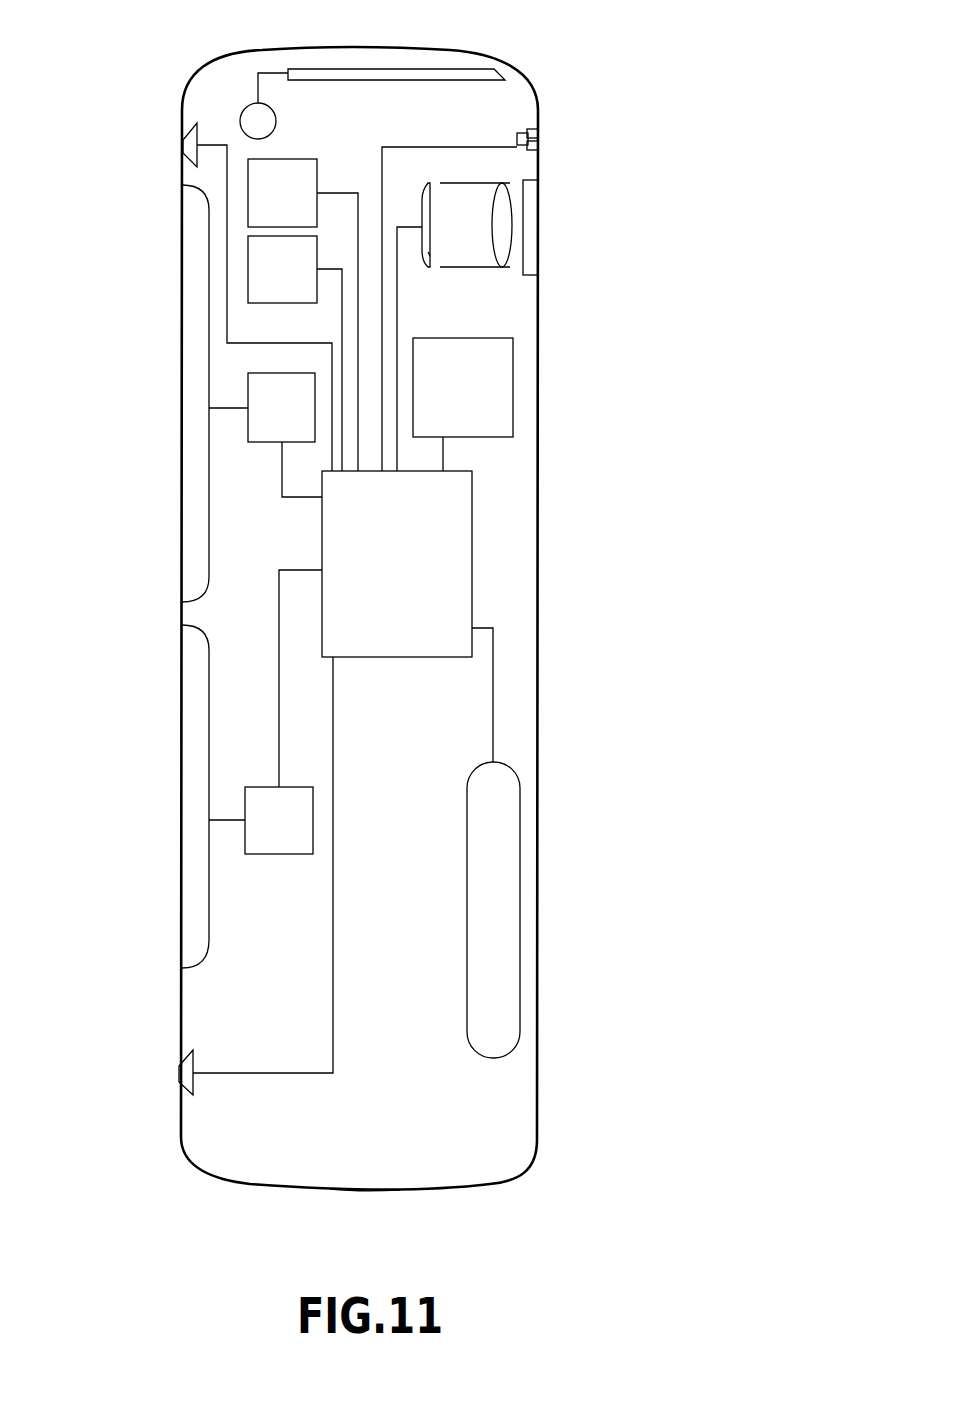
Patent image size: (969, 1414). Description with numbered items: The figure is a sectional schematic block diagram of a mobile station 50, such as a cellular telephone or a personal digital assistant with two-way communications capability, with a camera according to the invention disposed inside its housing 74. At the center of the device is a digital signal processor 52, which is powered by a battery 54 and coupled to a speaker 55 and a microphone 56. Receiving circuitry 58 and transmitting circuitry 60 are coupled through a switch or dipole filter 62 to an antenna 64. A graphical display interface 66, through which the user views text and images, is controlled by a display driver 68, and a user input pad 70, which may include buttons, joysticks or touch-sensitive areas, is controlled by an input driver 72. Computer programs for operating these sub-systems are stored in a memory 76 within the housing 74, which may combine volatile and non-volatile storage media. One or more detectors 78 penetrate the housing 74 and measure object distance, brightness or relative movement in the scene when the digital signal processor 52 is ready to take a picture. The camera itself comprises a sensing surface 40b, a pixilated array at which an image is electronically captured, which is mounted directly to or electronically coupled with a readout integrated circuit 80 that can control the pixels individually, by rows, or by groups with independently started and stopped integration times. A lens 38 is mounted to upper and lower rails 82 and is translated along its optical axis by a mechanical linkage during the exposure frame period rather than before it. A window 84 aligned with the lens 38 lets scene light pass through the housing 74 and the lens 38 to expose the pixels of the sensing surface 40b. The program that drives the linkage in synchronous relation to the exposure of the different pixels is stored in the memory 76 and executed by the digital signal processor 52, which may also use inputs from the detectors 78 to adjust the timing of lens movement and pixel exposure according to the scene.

The mobile station 50 is at (128, 666).
The digital signal processor 52 is at (472, 585).
The battery 54 is at (520, 884).
The speaker 55 is at (183, 146).
The microphone 56 is at (180, 1065).
The receiving circuitry 58 is at (247, 195).
The transmitting circuitry 60 is at (247, 270).
The switch or dipole filter 62 is at (253, 118).
The antenna 64 is at (403, 69).
The graphical display interface 66 is at (193, 328).
The display driver 68 is at (248, 428).
The user input pad 70 is at (176, 872).
The input driver 72 is at (245, 805).
The housing 74 is at (372, 1189).
The memory 76 is at (463, 404).
The detector 78 is at (540, 133).
The readout integrated circuit 80 is at (428, 202).
The upper and lower rails 82 is at (480, 183).
The window 84 is at (532, 222).
The lens 38 is at (500, 233).
The sensing surface 40b is at (428, 252).